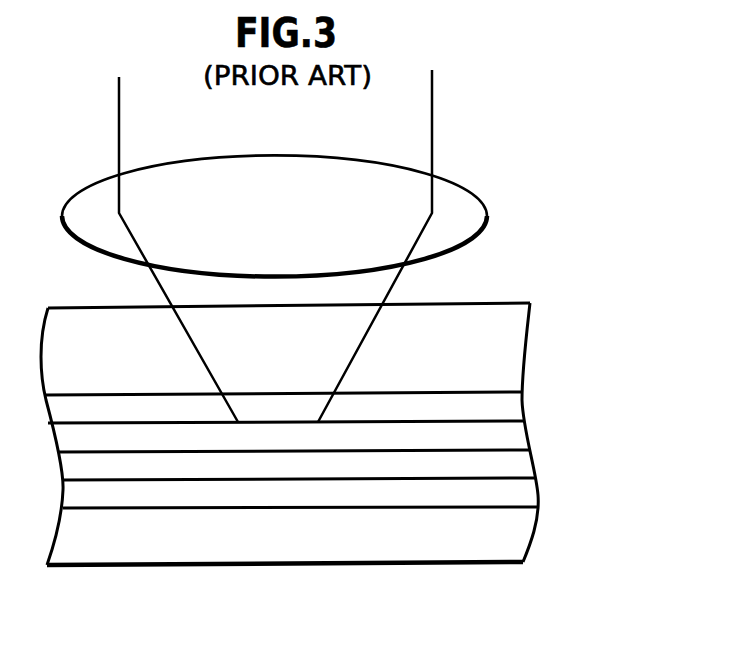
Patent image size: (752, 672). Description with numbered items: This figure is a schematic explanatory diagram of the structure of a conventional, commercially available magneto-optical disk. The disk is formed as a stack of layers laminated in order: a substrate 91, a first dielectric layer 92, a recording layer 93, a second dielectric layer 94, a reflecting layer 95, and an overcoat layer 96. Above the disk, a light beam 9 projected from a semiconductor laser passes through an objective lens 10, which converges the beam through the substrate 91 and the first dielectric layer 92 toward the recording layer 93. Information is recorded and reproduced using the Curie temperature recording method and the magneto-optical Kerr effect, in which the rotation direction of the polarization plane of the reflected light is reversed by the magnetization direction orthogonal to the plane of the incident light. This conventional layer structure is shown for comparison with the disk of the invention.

The light beam 9 is at (433, 105).
The objective lens 10 is at (488, 203).
The substrate 91 is at (512, 358).
The first dielectric layer 92 is at (513, 409).
The recording layer 93 is at (520, 438).
The second dielectric layer 94 is at (520, 467).
The reflecting layer 95 is at (531, 492).
The overcoat layer 96 is at (524, 536).